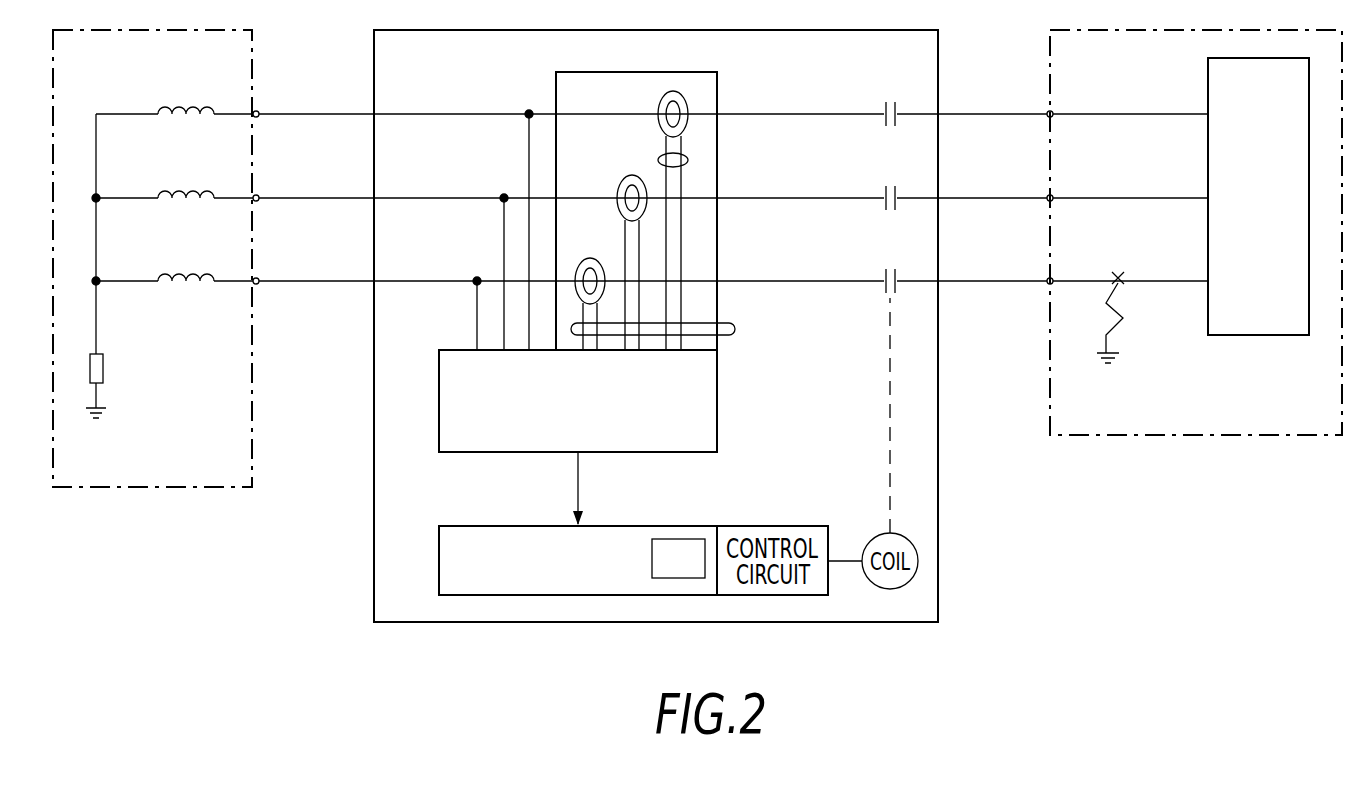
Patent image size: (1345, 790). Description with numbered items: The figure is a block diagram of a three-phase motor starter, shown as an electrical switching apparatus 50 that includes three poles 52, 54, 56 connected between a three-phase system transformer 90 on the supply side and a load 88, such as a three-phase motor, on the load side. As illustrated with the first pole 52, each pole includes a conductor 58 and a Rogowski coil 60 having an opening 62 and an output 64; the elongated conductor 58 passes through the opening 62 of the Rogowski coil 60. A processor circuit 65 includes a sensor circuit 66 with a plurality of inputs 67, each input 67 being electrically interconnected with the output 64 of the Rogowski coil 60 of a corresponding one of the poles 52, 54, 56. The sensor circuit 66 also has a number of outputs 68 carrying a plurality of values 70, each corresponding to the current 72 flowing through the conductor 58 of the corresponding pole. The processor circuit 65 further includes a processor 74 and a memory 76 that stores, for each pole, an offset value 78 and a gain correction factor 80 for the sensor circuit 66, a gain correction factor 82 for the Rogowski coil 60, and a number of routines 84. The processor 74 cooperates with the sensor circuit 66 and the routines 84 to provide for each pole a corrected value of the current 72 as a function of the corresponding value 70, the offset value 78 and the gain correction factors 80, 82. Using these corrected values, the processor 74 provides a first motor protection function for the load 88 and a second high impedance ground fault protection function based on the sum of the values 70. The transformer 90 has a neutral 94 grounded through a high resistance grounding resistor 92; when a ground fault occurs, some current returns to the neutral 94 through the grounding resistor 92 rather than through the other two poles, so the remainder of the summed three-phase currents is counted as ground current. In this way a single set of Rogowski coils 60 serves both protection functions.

The electrical switching apparatus 50 is at (890, 624).
The first pole 52 is at (906, 98).
The second pole 54 is at (906, 180).
The third pole 56 is at (906, 262).
The conductor 58 is at (797, 117).
The Rogowski coil 60 is at (661, 101).
The opening 62 is at (678, 106).
The output 64 is at (686, 157).
The processor circuit 65 is at (426, 578).
The sensor circuit 66 is at (439, 403).
The inputs 67 is at (735, 329).
The outputs 68 is at (574, 493).
The values 70 is at (579, 483).
The current 72 is at (530, 86).
The processor 74 is at (489, 597).
The memory 76 is at (695, 538).
The offset value 78 is at (657, 579).
The gain correction factor for the sensor circuit 80 is at (669, 579).
The gain correction factor for the Rogowski coil 82 is at (684, 579).
The routines 84 is at (702, 579).
The load 88 is at (1262, 337).
The three-phase system transformer 90 is at (224, 82).
The high resistance grounding resistor 92 is at (104, 367).
The transformer neutral 94 is at (99, 283).